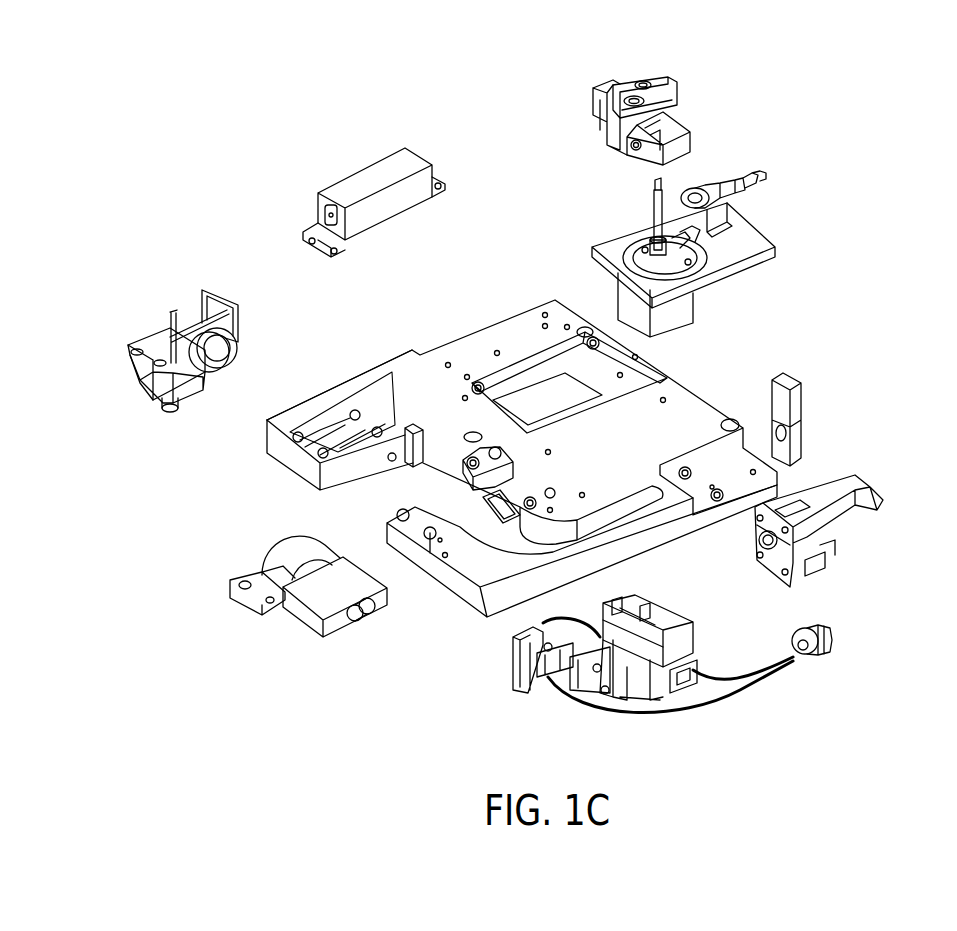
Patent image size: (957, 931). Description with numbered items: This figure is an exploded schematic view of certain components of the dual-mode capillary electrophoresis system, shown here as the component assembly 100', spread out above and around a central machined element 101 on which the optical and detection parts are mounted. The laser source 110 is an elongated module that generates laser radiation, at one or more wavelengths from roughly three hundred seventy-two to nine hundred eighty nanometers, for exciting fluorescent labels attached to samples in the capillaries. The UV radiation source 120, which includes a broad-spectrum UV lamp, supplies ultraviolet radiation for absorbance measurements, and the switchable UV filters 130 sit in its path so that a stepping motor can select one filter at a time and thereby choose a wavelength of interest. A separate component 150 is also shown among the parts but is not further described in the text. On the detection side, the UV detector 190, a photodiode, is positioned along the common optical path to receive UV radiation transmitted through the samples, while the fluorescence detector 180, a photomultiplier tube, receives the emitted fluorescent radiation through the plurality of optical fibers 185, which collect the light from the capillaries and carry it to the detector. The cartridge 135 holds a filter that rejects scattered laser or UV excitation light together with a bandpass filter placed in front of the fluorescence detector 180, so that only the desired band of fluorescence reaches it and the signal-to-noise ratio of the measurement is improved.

The optical assembly 100' is at (240, 231).
The base plate 101 is at (687, 416).
The laser source 110 is at (350, 158).
The UV radiation source 120 is at (778, 221).
The UV filters 130 is at (712, 118).
The cartridge 135 is at (842, 370).
The lens mount 150 is at (156, 299).
The fluorescence detector 180 is at (866, 541).
The optical fibers 185 is at (772, 703).
The UV detector 190 is at (280, 661).